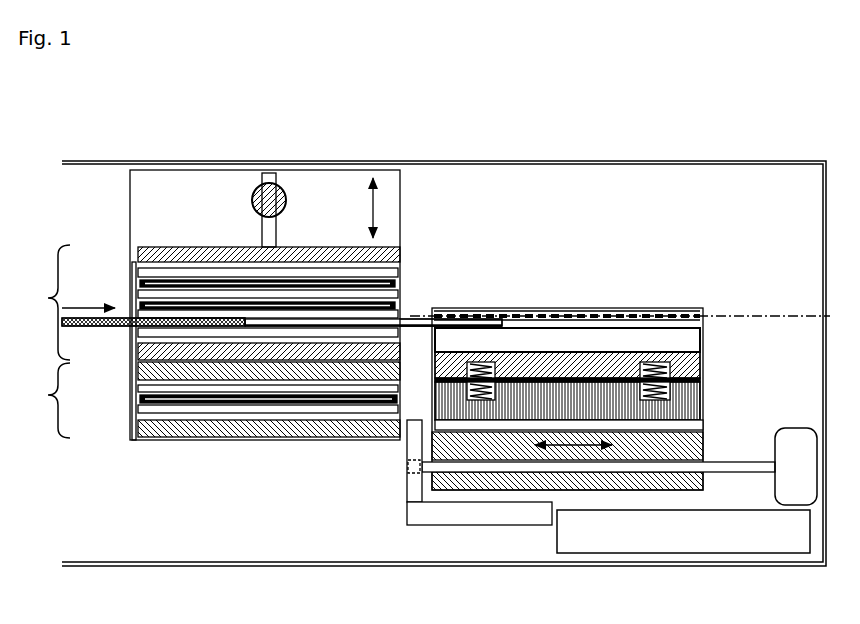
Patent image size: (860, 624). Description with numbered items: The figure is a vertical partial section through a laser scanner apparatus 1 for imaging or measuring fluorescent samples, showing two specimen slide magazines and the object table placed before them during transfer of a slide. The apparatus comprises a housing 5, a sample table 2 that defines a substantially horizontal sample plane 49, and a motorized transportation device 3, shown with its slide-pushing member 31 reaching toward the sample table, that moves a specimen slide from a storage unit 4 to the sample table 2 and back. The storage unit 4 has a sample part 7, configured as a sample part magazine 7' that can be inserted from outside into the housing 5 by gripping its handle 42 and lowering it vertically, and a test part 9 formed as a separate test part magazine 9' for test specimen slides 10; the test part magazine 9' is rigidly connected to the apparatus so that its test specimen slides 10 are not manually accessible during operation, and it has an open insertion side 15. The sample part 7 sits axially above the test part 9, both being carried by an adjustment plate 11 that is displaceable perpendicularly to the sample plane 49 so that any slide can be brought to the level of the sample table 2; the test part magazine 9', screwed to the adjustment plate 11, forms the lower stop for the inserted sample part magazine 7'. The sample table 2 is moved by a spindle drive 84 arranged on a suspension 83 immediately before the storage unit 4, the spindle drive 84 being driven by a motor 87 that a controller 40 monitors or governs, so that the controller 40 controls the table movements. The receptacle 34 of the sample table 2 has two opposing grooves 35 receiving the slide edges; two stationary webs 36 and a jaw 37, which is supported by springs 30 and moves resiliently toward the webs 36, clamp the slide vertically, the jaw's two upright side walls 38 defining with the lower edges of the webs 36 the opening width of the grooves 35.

The laser scanner apparatus 1 is at (444, 319).
The sample table 2 is at (672, 317).
The transportation device 3 is at (122, 328).
The shaft 31 is at (153, 322).
The storage unit 4 is at (224, 148).
The housing 5 is at (672, 160).
The sample part 7 is at (260, 286).
The sample part magazine 7' is at (241, 225).
The test part 9 is at (209, 386).
The test part magazine 9' is at (241, 447).
The test specimen slide 10 is at (300, 394).
The adjustment plate 11 is at (349, 208).
The open insertion side 15 is at (437, 277).
The spring 30 is at (672, 388).
The receptacle 34 is at (531, 300).
The groove 35 is at (628, 318).
The stationary web 36 is at (552, 313).
The jaw 37 is at (700, 373).
The upright side wall 38 is at (676, 341).
The controller 40 is at (683, 531).
The handle 42 is at (283, 186).
The sample plane 49 is at (783, 314).
The suspension 83 is at (425, 512).
The spindle drive 84 is at (733, 468).
The motor 87 is at (796, 466).